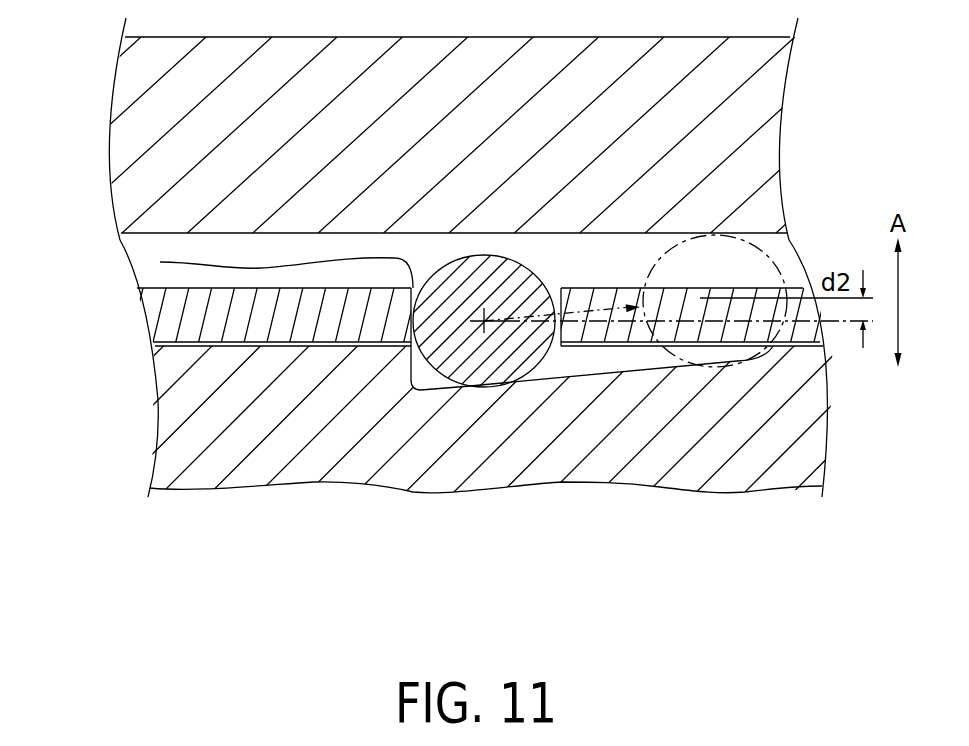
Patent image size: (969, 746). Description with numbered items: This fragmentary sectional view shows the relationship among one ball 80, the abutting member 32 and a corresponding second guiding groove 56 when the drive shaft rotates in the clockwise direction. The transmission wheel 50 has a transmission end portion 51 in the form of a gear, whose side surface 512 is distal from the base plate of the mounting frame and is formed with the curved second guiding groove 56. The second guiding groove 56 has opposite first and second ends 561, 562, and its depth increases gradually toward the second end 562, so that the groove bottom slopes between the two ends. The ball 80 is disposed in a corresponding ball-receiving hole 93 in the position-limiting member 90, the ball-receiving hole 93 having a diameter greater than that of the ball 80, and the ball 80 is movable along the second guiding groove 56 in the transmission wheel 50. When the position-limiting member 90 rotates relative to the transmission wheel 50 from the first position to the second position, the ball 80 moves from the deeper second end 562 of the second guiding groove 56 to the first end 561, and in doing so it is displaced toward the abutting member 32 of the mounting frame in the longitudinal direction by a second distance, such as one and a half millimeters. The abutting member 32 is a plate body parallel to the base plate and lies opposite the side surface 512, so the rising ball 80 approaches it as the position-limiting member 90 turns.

The abutting member 32 is at (767, 193).
The ball-receiving hole 93 is at (160, 262).
The position-limiting member 90 is at (168, 318).
The side surface 512 is at (238, 348).
The transmission end portion 51 is at (168, 432).
The transmission wheel 50 is at (140, 462).
The second end 562 is at (440, 391).
The second guiding groove 56 is at (627, 374).
The first end 561 is at (740, 356).
The ball 80 is at (495, 376).